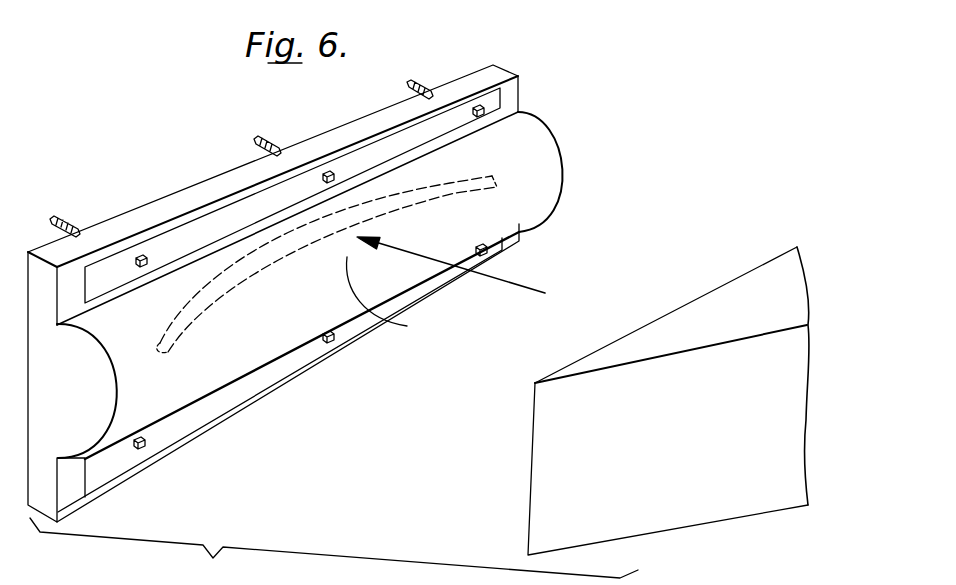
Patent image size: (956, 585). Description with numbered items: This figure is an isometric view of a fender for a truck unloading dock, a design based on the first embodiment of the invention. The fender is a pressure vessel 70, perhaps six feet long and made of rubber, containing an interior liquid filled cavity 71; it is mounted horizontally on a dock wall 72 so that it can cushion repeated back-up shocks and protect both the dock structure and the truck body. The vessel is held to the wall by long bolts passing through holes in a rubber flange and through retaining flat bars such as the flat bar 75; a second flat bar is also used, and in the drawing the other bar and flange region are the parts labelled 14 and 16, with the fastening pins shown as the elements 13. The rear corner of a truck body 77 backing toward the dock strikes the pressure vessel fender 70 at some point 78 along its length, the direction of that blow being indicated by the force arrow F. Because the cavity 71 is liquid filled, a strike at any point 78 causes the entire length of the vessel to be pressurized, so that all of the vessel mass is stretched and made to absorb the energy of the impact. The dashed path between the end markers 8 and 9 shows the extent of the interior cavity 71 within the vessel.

The pressure vessel 70 is at (555, 170).
The interior liquid filled cavity 71 is at (433, 198).
The dock wall 72 is at (518, 88).
The lower flange 14 is at (45, 487).
The retaining flat bar 75 is at (177, 240).
The lower groove 16 is at (207, 418).
The truck body 77 is at (630, 465).
The point of impact 78 is at (407, 326).
The pins 13 is at (72, 222).
The strip end 8 is at (498, 184).
The strip end 9 is at (158, 347).
The force direction F is at (521, 284).